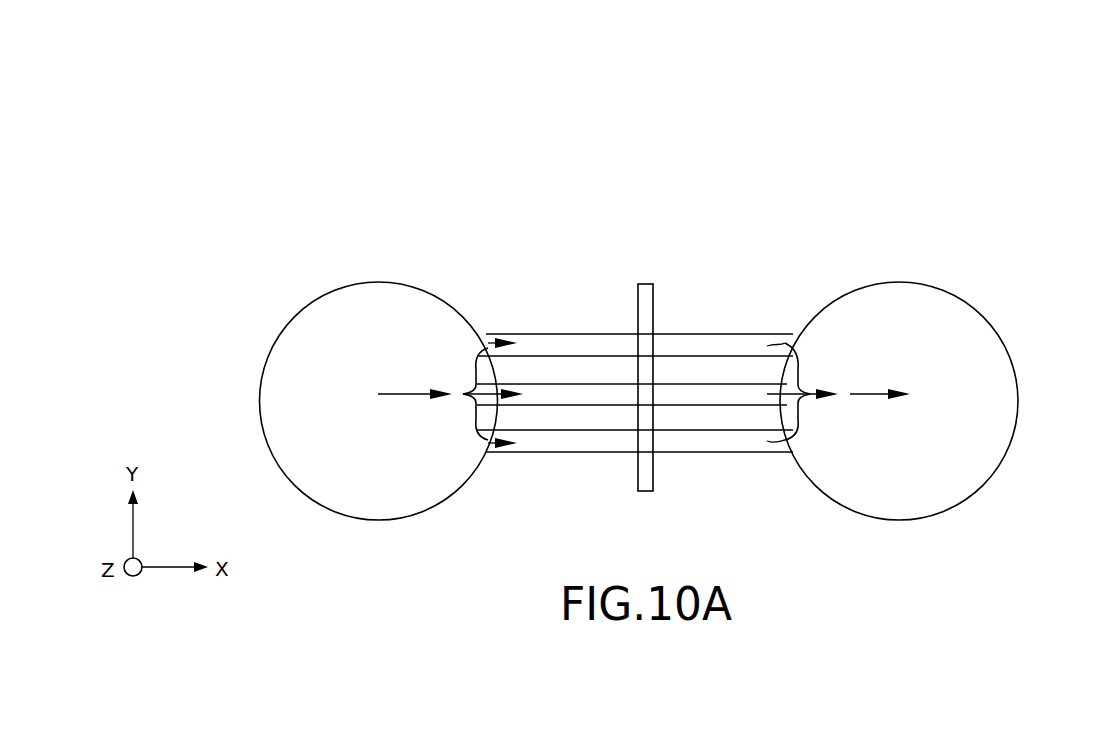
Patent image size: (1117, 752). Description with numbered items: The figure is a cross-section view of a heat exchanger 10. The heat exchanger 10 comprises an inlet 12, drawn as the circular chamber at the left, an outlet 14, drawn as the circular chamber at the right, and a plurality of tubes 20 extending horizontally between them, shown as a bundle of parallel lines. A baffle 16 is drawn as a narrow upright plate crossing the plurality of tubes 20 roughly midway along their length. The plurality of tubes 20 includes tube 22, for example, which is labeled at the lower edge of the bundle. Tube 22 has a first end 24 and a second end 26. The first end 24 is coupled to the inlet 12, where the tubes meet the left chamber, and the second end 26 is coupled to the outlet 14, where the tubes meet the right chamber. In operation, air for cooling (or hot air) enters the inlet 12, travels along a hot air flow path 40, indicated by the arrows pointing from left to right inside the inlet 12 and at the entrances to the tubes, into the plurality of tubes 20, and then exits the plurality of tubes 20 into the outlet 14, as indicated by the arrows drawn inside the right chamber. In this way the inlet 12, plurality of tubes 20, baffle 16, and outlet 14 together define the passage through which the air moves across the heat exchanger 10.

The heat exchanger 10 is at (532, 135).
The inlet 12 is at (335, 290).
The outlet 14 is at (1013, 362).
The baffle 16 is at (653, 300).
The plurality of tubes 20 is at (574, 305).
The tube 22 is at (567, 453).
The first end 24 is at (493, 478).
The second end 26 is at (768, 475).
The hot air flow path 40 is at (405, 395).